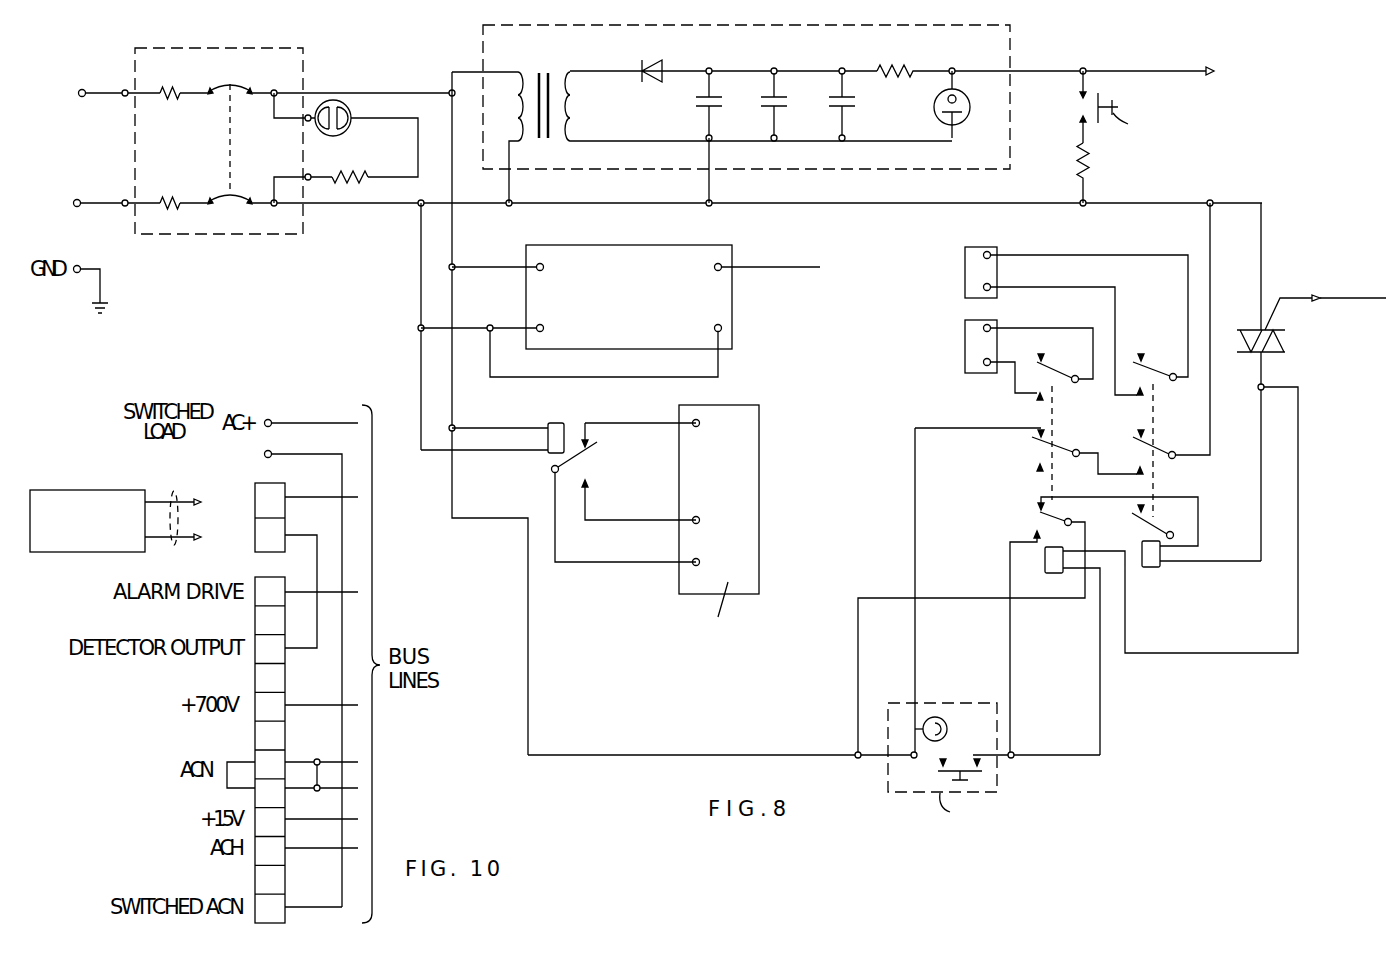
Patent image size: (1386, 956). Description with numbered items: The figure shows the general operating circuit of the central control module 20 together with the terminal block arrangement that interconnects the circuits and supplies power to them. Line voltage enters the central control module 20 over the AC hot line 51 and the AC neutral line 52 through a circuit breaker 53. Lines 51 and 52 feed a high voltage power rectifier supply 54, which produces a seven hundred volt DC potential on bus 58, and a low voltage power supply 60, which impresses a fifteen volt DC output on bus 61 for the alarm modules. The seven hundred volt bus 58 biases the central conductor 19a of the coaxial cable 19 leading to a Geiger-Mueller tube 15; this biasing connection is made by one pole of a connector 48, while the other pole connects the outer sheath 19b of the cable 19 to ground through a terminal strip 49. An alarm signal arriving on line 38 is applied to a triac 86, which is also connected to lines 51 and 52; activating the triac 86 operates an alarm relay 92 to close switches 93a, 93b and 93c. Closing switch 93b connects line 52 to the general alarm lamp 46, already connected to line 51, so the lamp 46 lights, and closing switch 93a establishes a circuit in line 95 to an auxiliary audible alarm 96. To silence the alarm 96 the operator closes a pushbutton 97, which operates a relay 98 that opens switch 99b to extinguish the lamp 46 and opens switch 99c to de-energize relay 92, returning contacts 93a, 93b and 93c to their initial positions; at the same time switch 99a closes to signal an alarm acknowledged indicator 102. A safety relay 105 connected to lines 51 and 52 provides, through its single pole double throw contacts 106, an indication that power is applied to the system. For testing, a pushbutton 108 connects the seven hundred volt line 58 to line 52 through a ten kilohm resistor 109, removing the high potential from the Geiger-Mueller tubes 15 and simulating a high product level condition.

In FIG. 10, the Geiger-Mueller tube 15 is at (60, 490).
In FIG. 10, the coaxial cable 19 is at (179, 498).
In FIG. 10, the central conductor 19a is at (157, 543).
In FIG. 10, the outer sheath 19b is at (157, 500).
In FIG. 8, the central control module 20 is at (1228, 177).
In FIG. 8, the line 38 is at (1290, 298).
In FIG. 8, the general alarm lamp 46 is at (945, 719).
In FIG. 10, the connector 48 is at (287, 505).
In FIG. 10, the terminal strip 49 is at (287, 672).
In FIG. 8, the AC line 51 is at (94, 92).
In FIG. 8, the AC line 52 is at (93, 203).
In FIG. 8, the circuit breaker 53 is at (194, 236).
In FIG. 8, the high voltage power rectifier supply 54 is at (1016, 53).
In FIG. 8, the bus 58 is at (1163, 70).
In FIG. 8, the low voltage power supply 60 is at (669, 245).
In FIG. 8, the bus 61 is at (773, 267).
In FIG. 8, the triac 86 is at (1253, 326).
In FIG. 8, the alarm relay 92 is at (1156, 571).
In FIG. 8, the switch 93a is at (1161, 372).
In FIG. 8, the switch 93b is at (1158, 446).
In FIG. 8, the switch 93c is at (1163, 520).
In FIG. 8, the line 95 is at (1115, 298).
In FIG. 8, the audible alarm 96 is at (965, 262).
In FIG. 8, the pushbutton 97 is at (986, 772).
In FIG. 8, the relay 98 is at (1057, 575).
In FIG. 8, the switch 99a is at (1059, 368).
In FIG. 8, the switch 99b is at (1058, 446).
In FIG. 8, the switch 99c is at (1039, 505).
In FIG. 8, the alarm acknowledged indicator 102 is at (965, 335).
In FIG. 8, the relay 105 is at (553, 421).
In FIG. 8, the contacts 106 is at (735, 491).
In FIG. 8, the pushbutton 108 is at (1106, 104).
In FIG. 8, the resistor 109 is at (1091, 164).